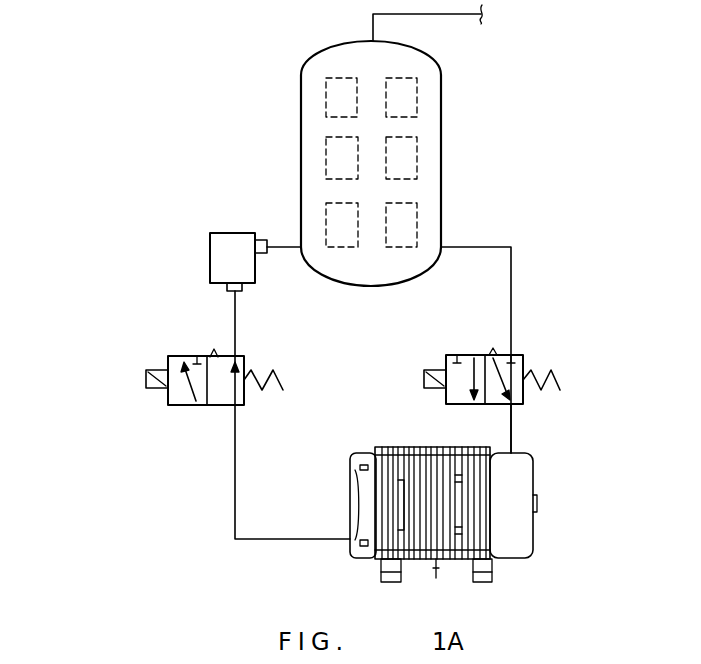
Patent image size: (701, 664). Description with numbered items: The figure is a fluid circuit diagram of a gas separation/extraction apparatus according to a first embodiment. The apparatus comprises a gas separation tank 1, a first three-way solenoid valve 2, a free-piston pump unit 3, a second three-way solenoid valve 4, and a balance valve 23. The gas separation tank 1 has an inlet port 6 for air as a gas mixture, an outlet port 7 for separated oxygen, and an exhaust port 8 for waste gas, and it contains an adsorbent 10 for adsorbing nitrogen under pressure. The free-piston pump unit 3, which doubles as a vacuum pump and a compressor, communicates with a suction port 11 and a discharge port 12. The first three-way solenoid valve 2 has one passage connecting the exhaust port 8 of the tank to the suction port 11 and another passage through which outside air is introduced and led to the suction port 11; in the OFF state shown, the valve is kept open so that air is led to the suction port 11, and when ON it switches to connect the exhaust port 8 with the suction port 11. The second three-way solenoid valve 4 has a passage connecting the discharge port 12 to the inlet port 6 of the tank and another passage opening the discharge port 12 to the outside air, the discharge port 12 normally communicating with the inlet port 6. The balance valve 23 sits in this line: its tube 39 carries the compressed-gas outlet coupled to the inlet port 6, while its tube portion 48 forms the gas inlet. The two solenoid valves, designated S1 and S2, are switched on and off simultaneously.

The gas separation tank 1 is at (428, 164).
The adsorbent 10 is at (417, 95).
The outlet port 7 is at (376, 42).
The inlet port 6 is at (300, 252).
The exhaust port 8 is at (446, 244).
The balance valve 23 is at (224, 238).
The tube 39 is at (263, 241).
The tube portion 48 is at (244, 287).
The discharge port 12 is at (348, 543).
The second three-way solenoid valve 4 is at (183, 355).
The second three-way solenoid valve S2 is at (263, 361).
The first three-way solenoid valve 2 is at (470, 355).
The first three-way solenoid valve S1 is at (541, 361).
The suction port 11 is at (514, 447).
The free-piston pump unit 3 is at (520, 541).